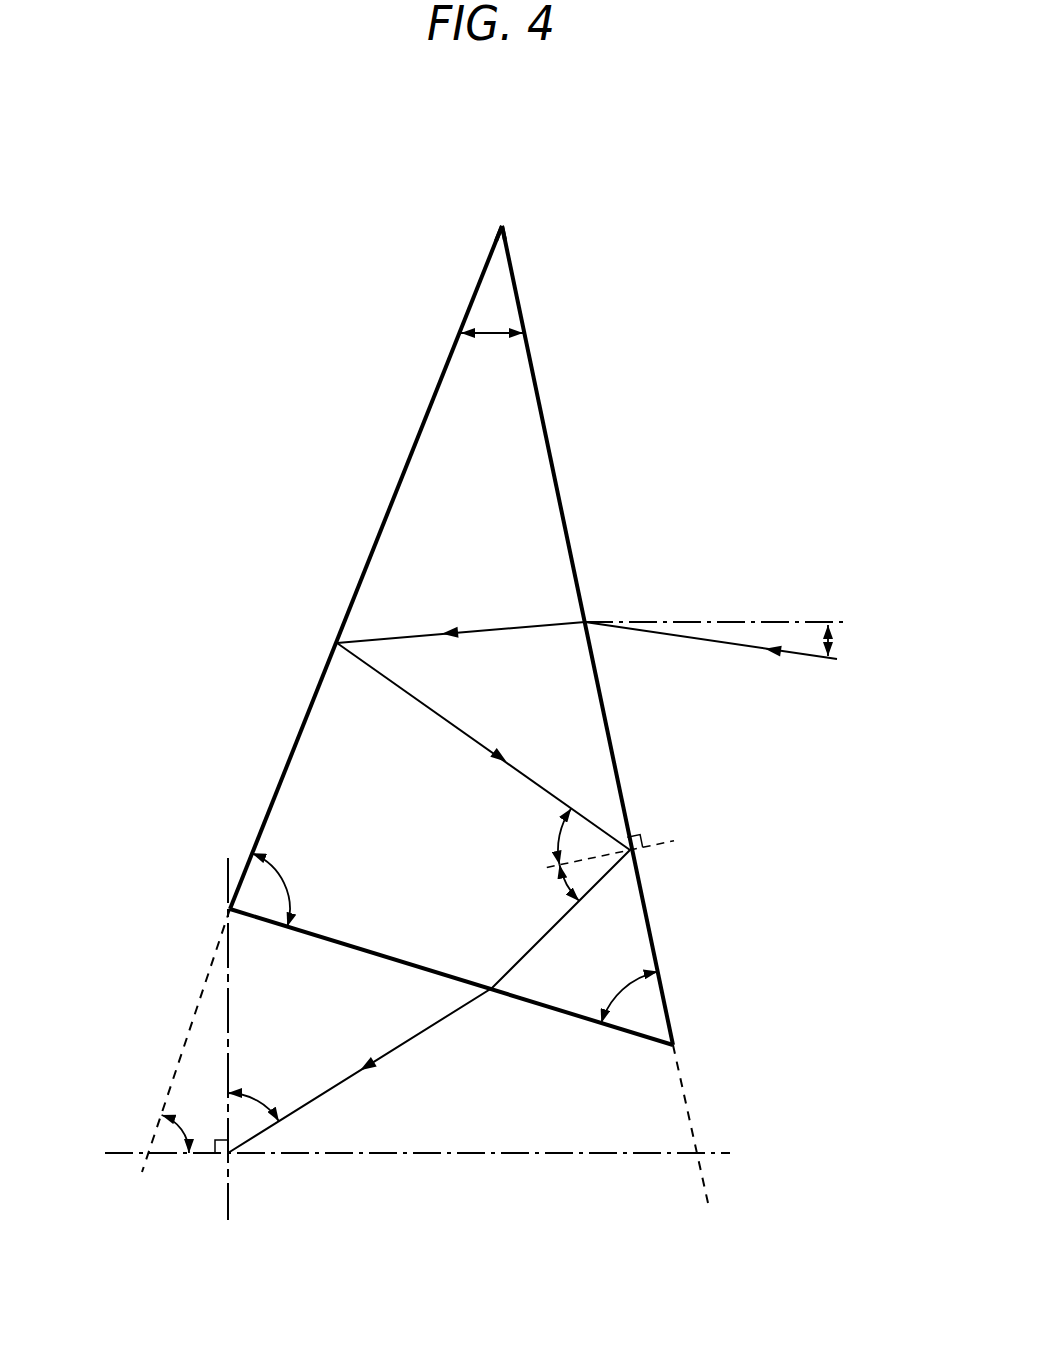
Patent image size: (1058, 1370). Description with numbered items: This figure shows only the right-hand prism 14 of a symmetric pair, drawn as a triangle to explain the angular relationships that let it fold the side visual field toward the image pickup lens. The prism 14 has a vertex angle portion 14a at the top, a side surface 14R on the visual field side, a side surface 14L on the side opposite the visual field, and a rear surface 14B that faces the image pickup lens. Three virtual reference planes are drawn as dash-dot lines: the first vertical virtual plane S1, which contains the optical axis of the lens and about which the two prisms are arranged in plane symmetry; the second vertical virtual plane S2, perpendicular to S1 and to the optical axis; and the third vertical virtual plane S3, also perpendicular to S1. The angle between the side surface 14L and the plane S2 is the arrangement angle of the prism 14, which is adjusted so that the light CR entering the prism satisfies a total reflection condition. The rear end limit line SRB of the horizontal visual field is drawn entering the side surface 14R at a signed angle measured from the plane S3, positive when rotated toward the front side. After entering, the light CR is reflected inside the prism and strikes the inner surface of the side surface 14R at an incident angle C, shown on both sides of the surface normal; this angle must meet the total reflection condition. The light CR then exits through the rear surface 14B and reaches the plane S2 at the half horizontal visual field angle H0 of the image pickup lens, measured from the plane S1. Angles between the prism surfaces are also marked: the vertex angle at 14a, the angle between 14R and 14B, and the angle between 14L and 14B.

The prism 14 is at (425, 677).
The vertex angle portion 14a is at (502, 224).
The side surface of the prism at the opposite visual field side 14L is at (400, 484).
The side surface of the prism in the visual field side 14R is at (553, 468).
The rear surface of the prism 14B is at (330, 940).
The first vertical virtual plane S1 is at (227, 868).
The second vertical virtual plane S2 is at (458, 1156).
The third vertical virtual plane S3 is at (820, 613).
The rear end limit line of the horizontal visual field angle SRB is at (813, 660).
The light CR is at (448, 723).
The incident angle C is at (556, 835).
The half horizontal visual field angle of the image pickup lens H0 is at (268, 1092).